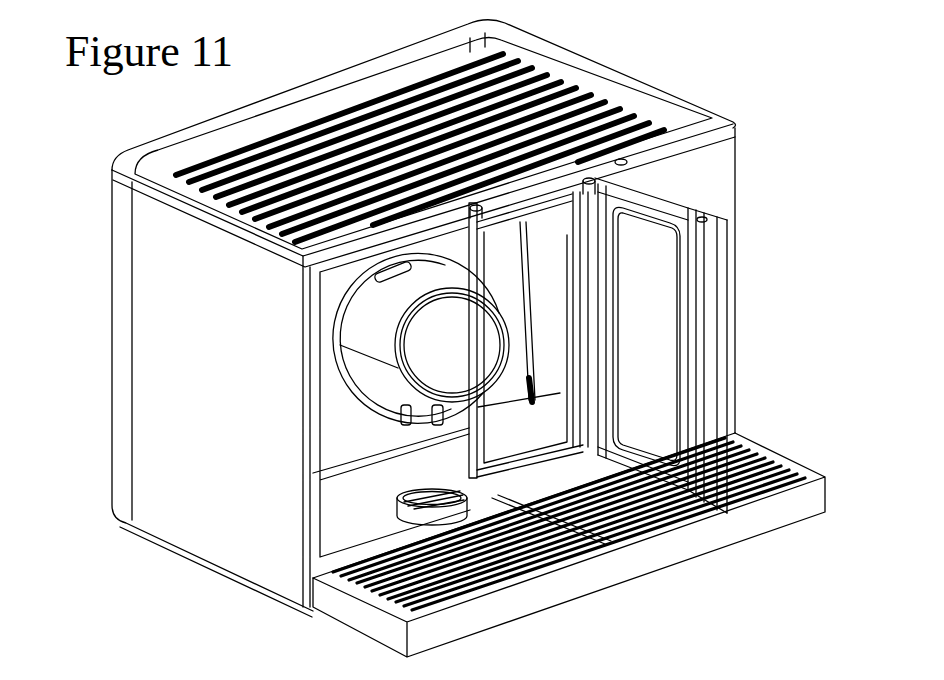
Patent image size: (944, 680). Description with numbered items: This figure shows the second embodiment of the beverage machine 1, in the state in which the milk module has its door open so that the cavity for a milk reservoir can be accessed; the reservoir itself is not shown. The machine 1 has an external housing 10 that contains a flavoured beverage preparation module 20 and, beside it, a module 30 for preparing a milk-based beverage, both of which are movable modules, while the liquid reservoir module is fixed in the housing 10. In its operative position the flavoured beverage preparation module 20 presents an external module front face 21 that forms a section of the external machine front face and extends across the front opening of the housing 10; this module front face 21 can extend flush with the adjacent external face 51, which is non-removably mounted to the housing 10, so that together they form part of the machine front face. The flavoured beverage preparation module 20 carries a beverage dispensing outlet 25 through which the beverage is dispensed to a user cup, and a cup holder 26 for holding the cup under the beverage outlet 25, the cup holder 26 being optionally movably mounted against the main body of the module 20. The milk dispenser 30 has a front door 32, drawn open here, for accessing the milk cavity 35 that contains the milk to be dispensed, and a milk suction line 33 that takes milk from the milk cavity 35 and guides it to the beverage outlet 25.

The machine 1 is at (706, 51).
The external housing 10 is at (158, 335).
The flavoured beverage preparation module 20 is at (313, 322).
The external module front face 21 is at (457, 340).
The beverage dispensing outlet 25 is at (427, 425).
The cup holder 26 is at (420, 507).
The module for preparing a milk-based beverage 30 is at (502, 427).
The front door 32 is at (675, 202).
The milk suction line 33 is at (527, 300).
The milk cavity 35 is at (556, 344).
The external face of liquid reservoir module 51 is at (732, 127).